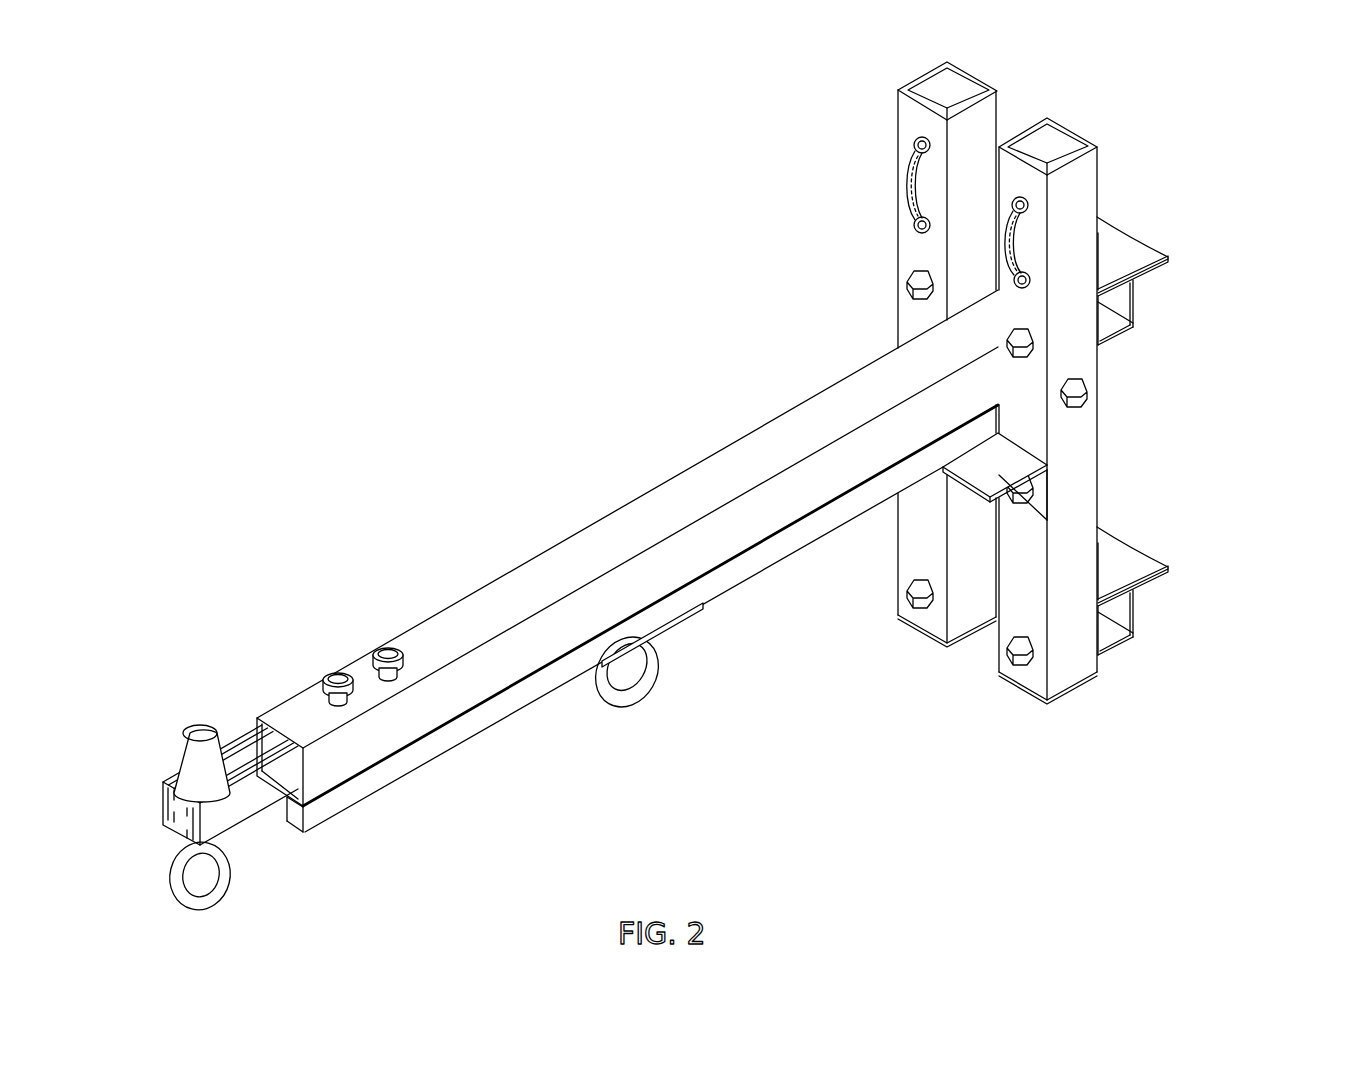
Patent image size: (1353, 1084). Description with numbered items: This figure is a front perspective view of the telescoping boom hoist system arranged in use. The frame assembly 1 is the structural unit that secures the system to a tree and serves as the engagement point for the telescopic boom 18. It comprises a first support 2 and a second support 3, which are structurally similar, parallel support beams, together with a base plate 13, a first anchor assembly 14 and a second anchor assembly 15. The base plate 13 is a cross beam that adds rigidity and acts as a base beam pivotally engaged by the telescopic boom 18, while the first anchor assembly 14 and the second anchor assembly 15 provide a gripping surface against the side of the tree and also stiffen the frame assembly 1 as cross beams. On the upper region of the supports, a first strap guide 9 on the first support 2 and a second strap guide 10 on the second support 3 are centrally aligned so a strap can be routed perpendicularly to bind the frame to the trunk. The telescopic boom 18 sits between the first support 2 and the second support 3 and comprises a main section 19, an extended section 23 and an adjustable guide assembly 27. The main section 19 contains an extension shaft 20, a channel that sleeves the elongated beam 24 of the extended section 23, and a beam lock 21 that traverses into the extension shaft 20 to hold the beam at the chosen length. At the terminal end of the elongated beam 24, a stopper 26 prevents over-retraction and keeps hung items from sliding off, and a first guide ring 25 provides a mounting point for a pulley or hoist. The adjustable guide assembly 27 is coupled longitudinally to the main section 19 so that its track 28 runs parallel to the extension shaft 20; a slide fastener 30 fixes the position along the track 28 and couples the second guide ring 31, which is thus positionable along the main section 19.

The frame assembly 1 is at (828, 238).
The first support 2 is at (1086, 190).
The second support 3 is at (908, 121).
The first strap guide 9 is at (1017, 236).
The second strap guide 10 is at (908, 167).
The base plate 13 is at (1003, 466).
The first anchor assembly 14 is at (1162, 283).
The second anchor assembly 15 is at (1162, 598).
The telescopic boom 18 is at (416, 531).
The main section 19 is at (655, 503).
The extension shaft 20 is at (300, 786).
The beam lock 21 is at (338, 672).
The extended section 23 is at (197, 704).
The elongated beam 24 is at (230, 745).
The first guide ring 25 is at (170, 868).
The stopper 26 is at (190, 733).
The adjustable guide assembly 27 is at (770, 606).
The track 28 is at (297, 813).
The slide fastener 30 is at (672, 633).
The second guide ring 31 is at (632, 700).